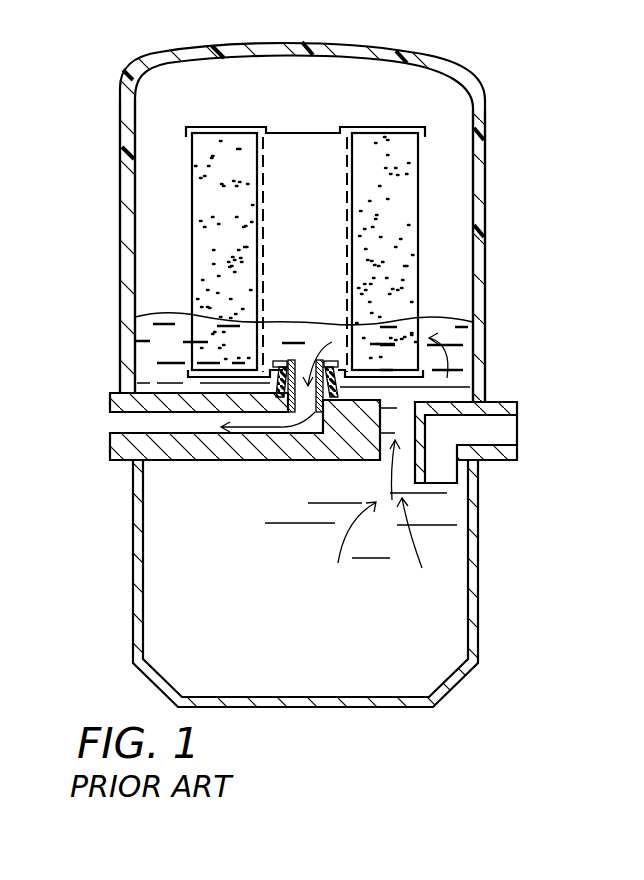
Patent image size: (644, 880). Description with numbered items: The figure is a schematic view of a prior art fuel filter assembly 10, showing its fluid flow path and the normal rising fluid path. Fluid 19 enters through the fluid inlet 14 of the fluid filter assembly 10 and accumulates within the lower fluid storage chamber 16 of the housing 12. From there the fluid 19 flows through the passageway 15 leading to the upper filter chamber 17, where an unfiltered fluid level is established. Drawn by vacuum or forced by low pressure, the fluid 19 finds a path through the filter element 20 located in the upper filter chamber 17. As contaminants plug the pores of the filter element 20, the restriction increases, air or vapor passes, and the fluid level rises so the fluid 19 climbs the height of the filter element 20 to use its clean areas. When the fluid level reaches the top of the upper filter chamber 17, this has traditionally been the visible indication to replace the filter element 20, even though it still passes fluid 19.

The fluid filter assembly 10 is at (343, 374).
The housing 12 is at (498, 290).
The fluid inlet 14 is at (490, 437).
The passageway 15 is at (400, 410).
The lower fluid storage chamber 16 is at (450, 612).
The upper filter chamber 17 is at (455, 165).
The fluid 19 is at (447, 512).
The filter element 20 is at (405, 222).